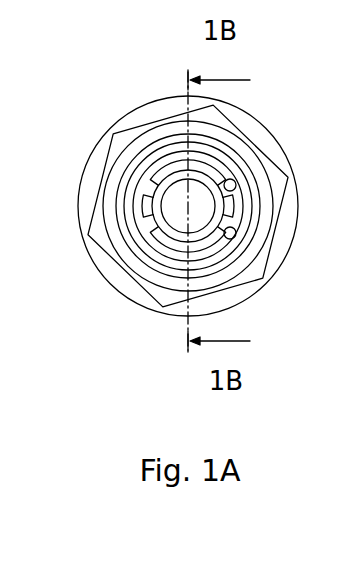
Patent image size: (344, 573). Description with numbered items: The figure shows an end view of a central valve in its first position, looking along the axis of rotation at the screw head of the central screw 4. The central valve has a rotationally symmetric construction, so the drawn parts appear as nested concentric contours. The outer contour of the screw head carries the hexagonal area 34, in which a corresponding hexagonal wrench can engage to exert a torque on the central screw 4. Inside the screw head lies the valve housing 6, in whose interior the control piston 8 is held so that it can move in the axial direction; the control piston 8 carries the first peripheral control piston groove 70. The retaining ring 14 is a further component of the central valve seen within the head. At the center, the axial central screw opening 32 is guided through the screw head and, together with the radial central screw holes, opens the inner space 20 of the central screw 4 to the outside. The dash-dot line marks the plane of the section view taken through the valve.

The central screw 4 is at (157, 138).
The retaining ring 14 is at (217, 160).
The valve housing 6 is at (245, 188).
The axial central screw opening 32 is at (284, 182).
The first peripheral control piston groove 70 is at (223, 206).
The inner space 20 is at (343, 264).
The control piston 8 is at (212, 228).
The hexagonal area 34 is at (102, 235).